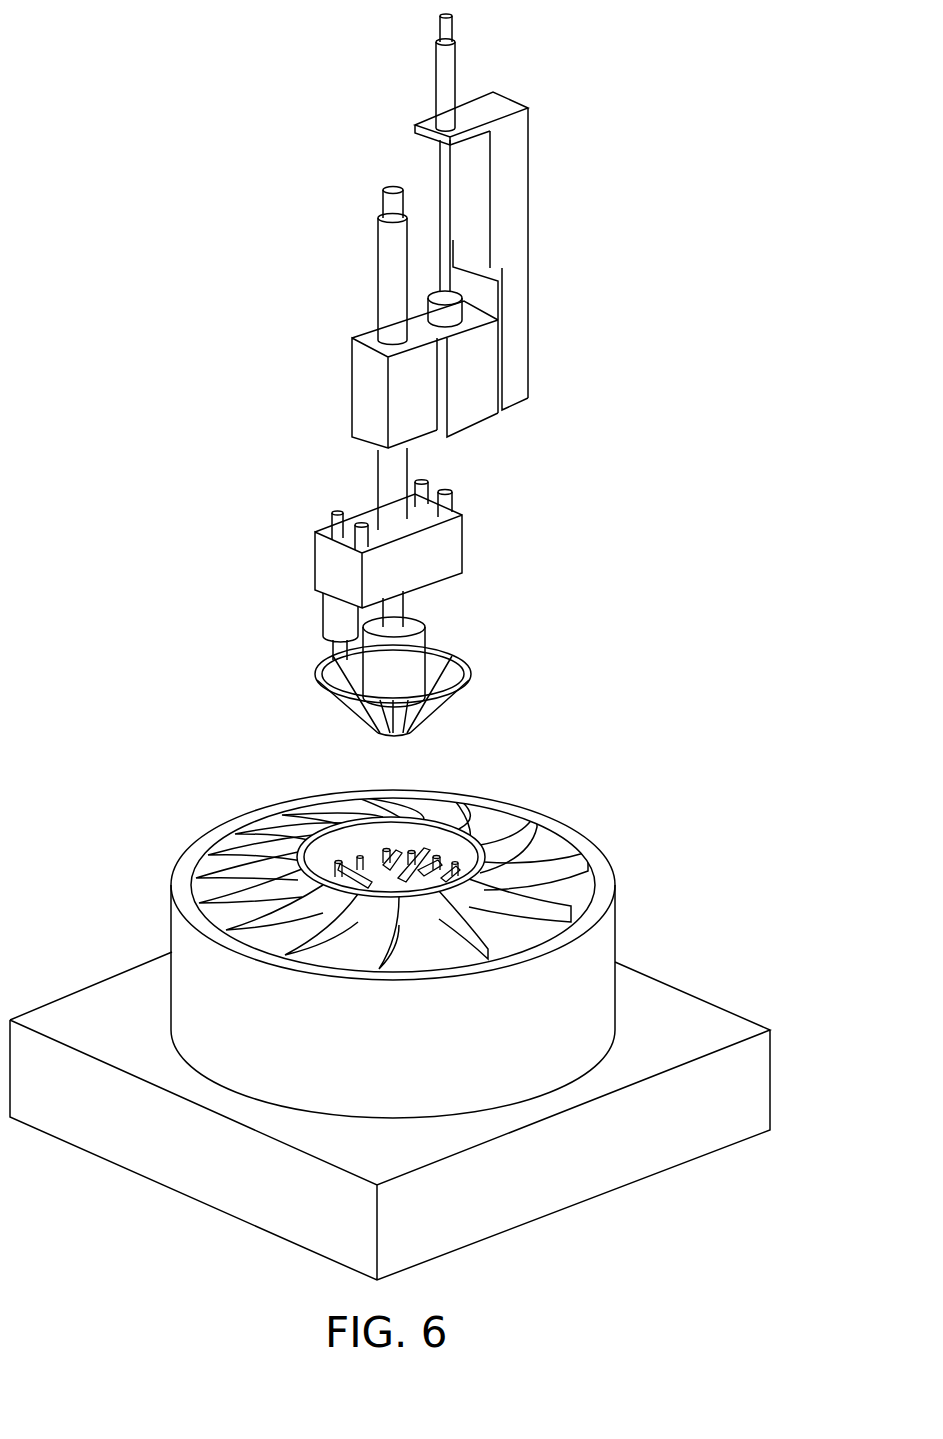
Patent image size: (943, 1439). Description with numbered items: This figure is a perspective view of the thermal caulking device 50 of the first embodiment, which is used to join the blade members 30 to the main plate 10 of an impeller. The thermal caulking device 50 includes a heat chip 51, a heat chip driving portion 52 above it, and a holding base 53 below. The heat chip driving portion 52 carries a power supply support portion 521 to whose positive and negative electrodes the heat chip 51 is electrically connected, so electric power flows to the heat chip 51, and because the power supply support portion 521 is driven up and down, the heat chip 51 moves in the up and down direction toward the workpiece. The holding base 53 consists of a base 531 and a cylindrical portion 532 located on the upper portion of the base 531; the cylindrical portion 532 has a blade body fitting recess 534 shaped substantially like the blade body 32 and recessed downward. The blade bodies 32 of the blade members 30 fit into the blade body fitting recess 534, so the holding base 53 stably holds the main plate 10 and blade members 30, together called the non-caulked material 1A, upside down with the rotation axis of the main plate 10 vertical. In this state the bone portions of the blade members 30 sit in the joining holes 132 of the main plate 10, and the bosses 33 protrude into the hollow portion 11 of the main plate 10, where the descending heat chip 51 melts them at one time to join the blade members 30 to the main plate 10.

The thermal caulking device 50 is at (712, 212).
The heat chip driving portion 52 is at (438, 667).
The power supply support portion 521 is at (316, 625).
The heat chip 51 is at (450, 713).
The holding base 53 is at (657, 851).
The base 531 is at (723, 1020).
The cylindrical portion 532 is at (595, 981).
The blade body fitting recess 534 is at (353, 950).
The non-caulked material 1A is at (502, 822).
The main plate 10 is at (445, 810).
The hollow portion 11 is at (411, 849).
The boss 33 is at (370, 852).
The blade member 30 is at (585, 878).
The blade body 32 is at (500, 940).
The joining hole 132 is at (426, 930).